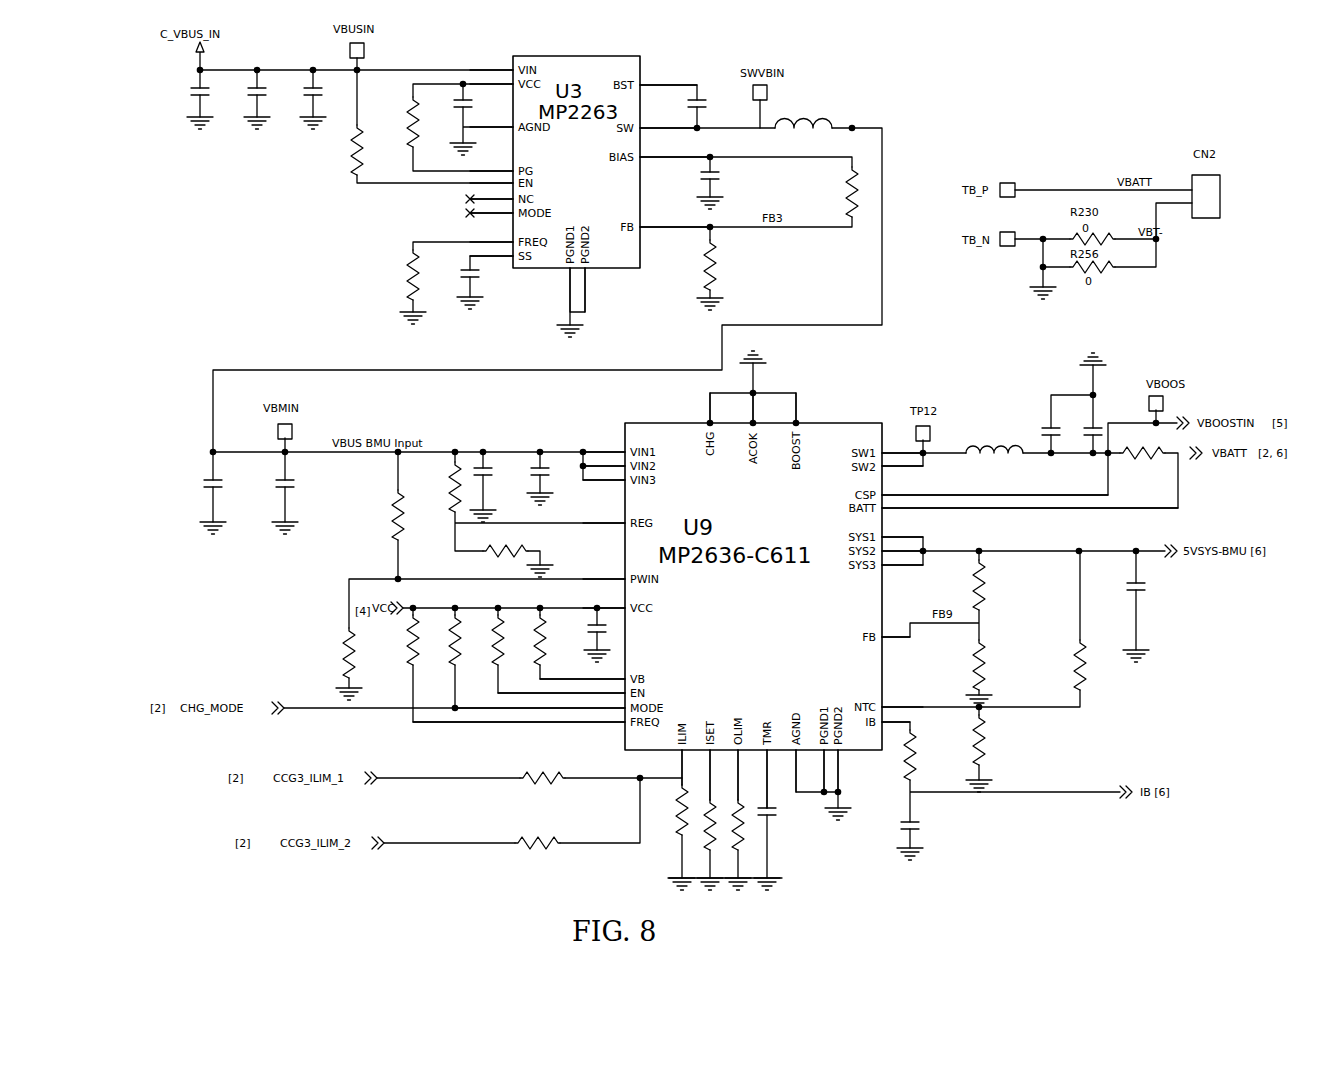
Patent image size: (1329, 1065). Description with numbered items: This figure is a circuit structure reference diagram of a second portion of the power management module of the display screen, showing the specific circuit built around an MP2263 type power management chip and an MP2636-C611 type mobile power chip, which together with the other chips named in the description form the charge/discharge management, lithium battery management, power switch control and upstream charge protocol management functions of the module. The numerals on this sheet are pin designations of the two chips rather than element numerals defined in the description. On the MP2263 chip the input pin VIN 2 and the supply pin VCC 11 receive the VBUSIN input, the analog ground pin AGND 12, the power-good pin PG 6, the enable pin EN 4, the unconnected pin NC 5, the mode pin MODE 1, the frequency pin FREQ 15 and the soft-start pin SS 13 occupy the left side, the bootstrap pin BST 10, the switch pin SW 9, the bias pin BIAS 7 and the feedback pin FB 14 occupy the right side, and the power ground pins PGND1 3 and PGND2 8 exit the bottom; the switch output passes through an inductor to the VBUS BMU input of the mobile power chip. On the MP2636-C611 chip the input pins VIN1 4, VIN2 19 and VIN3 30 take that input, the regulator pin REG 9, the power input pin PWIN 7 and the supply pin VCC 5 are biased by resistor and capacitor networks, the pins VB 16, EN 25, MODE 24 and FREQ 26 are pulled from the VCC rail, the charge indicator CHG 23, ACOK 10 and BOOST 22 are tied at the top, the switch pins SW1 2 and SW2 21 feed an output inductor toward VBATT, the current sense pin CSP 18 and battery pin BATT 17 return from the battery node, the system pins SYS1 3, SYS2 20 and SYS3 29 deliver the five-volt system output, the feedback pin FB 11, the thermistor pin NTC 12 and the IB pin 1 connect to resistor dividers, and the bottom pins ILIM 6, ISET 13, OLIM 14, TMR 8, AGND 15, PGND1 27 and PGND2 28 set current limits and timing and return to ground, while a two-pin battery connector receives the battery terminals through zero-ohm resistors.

The pin 1 (U3 MODE / U9 IB) 1 is at (690, 461).
The pin 2 (U3 VIN / U9 SW1) 2 is at (696, 255).
The pin 3 (U3 PGND1 / U9 SYS1) 3 is at (740, 402).
The pin 4 (U3 EN / U9 VIN1) 4 is at (547, 311).
The pin 5 (U3 NC / U9 VCC) 5 is at (547, 397).
The pin 6 (U3 PG / U9 ILIM) 6 is at (576, 472).
The pin 7 (U3 BIAS / U9 PWIN) 7 is at (646, 362).
The pin 8 (U3 PGND2 / U9 TMR) 8 is at (669, 538).
The pin 9 (U3 SW / U9 REG) 9 is at (640, 319).
The pin 10 (U3 BST / U9 ACOK) 10 is at (696, 248).
The pin 11 (U3 VCC / U9 FB) 11 is at (690, 354).
The pin 12 (U3 AGND / U9 NTC) 12 is at (696, 411).
The pin 13 (U3 SS / U9 ISET) 13 is at (590, 522).
The pin 14 (U3 FB / U9 OLIM) 14 is at (689, 507).
The pin 15 (U3 FREQ / U9 AGND) 15 is at (633, 511).
The pin 16 (U9 VB) 16 is at (582, 673).
The pin 17 (U9 BATT) 17 is at (1030, 502).
The pin 18 (U9 CSP) 18 is at (995, 489).
The pin 19 (U9 VIN2) 19 is at (604, 460).
The pin 20 (U9 SYS2) 20 is at (902, 545).
The pin 21 (U9 SW2) 21 is at (902, 460).
The pin 22 (U9 BOOST) 22 is at (789, 408).
The pin 23 (U9 CHG) 23 is at (703, 408).
The pin 24 (U9 MODE) 24 is at (540, 702).
The pin 25 (U9 EN) 25 is at (561, 687).
The pin 26 (U9 FREQ) 26 is at (519, 716).
The pin 27 (U9 PGND1) 27 is at (817, 771).
The pin 28 (U9 PGND2) 28 is at (831, 771).
The pin 29 (U9 SYS3) 29 is at (902, 559).
The pin 30 (U9 VIN3) 30 is at (604, 474).